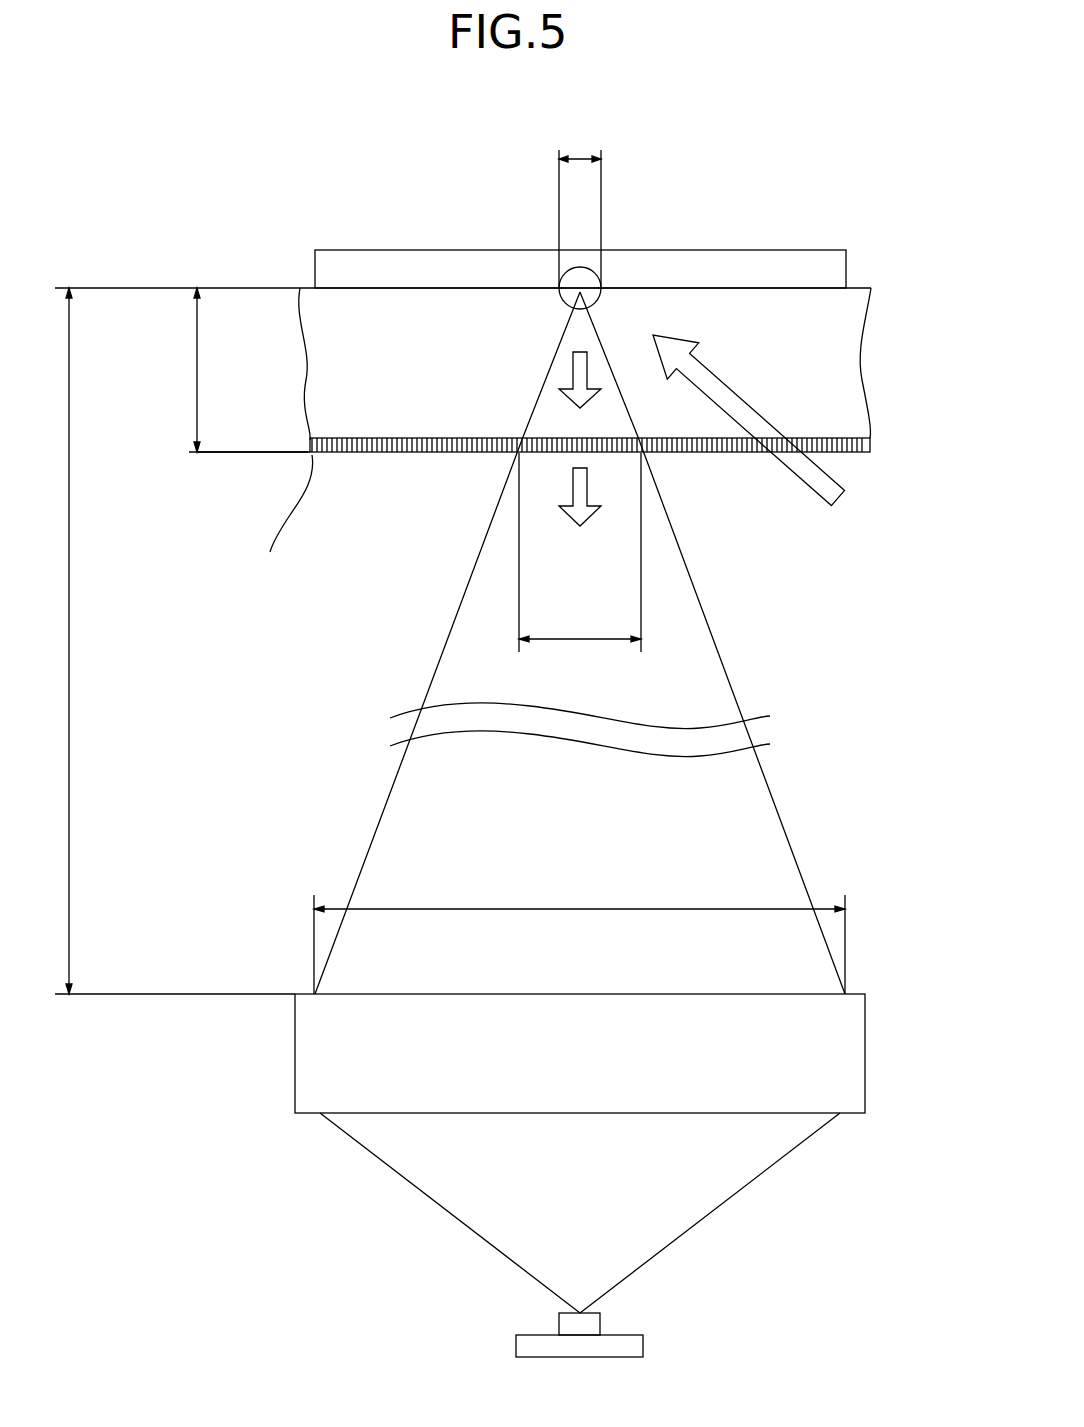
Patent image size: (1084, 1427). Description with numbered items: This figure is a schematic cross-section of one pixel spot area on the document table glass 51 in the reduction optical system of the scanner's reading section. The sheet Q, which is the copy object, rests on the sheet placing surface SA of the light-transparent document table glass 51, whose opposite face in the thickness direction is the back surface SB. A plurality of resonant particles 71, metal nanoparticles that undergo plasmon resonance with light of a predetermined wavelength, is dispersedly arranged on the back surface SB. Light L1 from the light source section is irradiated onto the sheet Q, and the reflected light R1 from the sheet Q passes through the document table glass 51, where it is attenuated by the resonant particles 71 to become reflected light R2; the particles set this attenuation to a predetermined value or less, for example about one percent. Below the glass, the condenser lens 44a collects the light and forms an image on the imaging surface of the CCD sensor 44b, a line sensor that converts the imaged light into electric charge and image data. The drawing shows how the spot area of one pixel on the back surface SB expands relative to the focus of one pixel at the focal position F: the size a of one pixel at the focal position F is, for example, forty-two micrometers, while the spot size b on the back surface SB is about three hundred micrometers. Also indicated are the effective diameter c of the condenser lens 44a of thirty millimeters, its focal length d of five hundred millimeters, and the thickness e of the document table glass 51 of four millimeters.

The sheet Q is at (395, 262).
The document table glass 51 is at (722, 310).
The sheet placing surface SA is at (805, 290).
The back surface SB is at (842, 460).
The focal position F is at (578, 282).
The reflected light R1 is at (573, 376).
The reflected light R2 is at (573, 501).
The resonant particle 71 is at (283, 515).
The light L1 is at (843, 492).
The condenser lens 44a is at (843, 1057).
The CCD sensor 44b is at (592, 1325).
The size of one pixel a is at (580, 207).
The spot size b is at (580, 552).
The effective diameter c is at (579, 935).
The focal length d is at (166, 641).
The thickness e is at (239, 370).